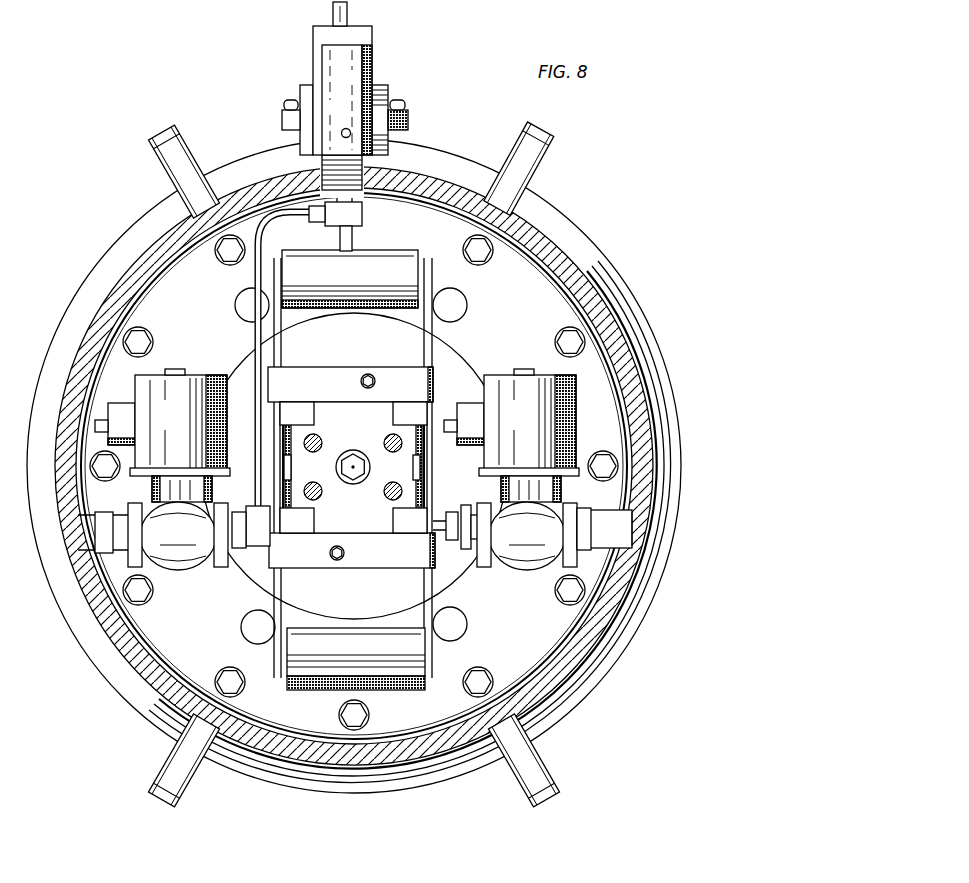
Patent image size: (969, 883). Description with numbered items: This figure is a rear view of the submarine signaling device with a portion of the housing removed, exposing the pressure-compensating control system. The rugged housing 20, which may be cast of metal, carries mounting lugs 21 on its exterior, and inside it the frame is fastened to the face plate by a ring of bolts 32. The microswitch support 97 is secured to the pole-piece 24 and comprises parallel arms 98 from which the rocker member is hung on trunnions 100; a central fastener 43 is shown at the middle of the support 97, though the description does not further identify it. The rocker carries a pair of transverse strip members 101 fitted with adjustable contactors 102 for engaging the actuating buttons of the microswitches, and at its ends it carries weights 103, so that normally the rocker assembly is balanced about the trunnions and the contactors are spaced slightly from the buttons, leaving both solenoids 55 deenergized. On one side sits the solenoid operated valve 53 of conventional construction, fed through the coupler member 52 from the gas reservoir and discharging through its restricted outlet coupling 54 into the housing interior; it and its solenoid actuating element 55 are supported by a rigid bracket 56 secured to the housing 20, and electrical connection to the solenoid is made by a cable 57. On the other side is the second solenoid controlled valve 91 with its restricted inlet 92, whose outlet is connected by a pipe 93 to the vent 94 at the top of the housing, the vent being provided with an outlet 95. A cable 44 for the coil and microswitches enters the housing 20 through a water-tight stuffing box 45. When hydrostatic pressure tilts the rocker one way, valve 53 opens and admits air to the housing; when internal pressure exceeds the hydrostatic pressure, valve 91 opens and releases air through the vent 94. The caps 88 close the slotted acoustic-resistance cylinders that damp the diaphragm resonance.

The housing 20 is at (74, 350).
The mounting lugs 21 is at (178, 150).
The pole-piece 24 is at (446, 576).
The bolts 32 is at (151, 343).
The central bolt 43 is at (356, 478).
The cable 44 is at (348, 14).
The stuffing box 45 is at (380, 101).
The coupler member 52 is at (441, 535).
The solenoid operated valve 53 is at (514, 565).
The restricted outlet coupling 54 is at (596, 528).
The solenoid actuating element 55 is at (354, 435).
The bracket 56 is at (602, 548).
The cable 57 is at (109, 412).
The cap 88 is at (242, 305).
The second solenoid controlled valve 91 is at (175, 567).
The restricted inlet 92 is at (106, 536).
The pipe 93 is at (256, 331).
The vent 94 is at (355, 78).
The outlet 95 is at (351, 134).
The support 97 is at (353, 467).
The parallel arms 98 is at (296, 433).
The trunnions 100 is at (291, 466).
The transverse strip members 101 is at (311, 376).
The adjustable contactors 102 is at (370, 378).
The weights 103 is at (398, 250).